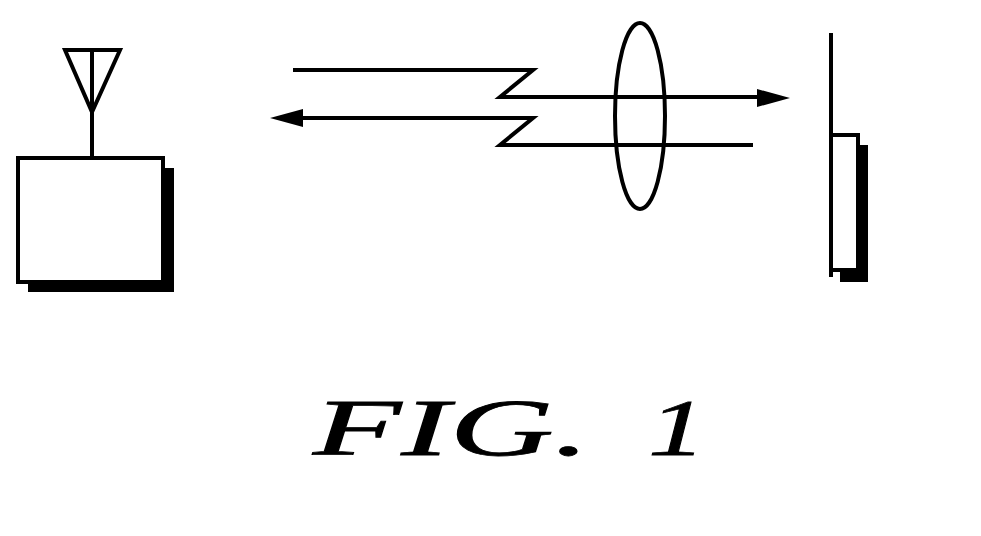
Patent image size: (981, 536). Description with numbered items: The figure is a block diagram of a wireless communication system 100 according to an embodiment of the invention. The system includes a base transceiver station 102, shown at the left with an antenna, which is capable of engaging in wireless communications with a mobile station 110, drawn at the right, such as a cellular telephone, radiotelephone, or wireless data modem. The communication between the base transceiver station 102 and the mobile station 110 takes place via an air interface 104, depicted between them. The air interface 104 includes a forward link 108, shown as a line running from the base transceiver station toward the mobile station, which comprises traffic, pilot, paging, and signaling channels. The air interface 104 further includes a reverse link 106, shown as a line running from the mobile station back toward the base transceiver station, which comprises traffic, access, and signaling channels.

The wireless communication system 100 is at (116, 387).
The base transceiver station 102 is at (176, 250).
The air interface 104 is at (640, 207).
The reverse link 106 is at (342, 116).
The forward link 108 is at (342, 72).
The mobile station 110 is at (867, 170).